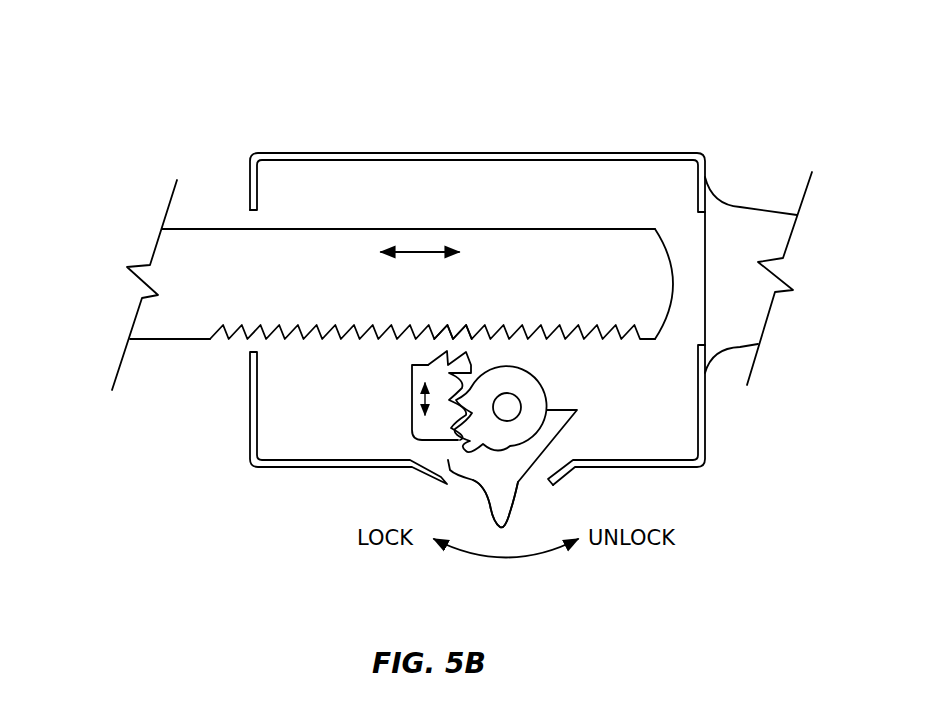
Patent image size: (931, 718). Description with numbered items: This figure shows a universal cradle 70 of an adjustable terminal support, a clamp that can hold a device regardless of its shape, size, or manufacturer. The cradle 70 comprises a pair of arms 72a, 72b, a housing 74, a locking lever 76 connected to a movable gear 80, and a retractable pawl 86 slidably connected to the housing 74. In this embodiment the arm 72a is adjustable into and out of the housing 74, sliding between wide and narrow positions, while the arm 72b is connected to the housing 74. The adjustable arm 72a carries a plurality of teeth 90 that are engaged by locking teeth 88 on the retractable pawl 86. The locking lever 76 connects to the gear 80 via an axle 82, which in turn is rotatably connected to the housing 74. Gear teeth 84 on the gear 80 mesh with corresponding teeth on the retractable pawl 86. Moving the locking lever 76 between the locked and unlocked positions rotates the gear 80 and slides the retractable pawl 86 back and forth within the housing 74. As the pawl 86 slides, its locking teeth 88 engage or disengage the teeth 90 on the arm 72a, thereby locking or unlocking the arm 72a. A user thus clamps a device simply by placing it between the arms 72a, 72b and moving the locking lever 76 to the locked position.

The universal cradle 70 is at (778, 65).
The arm 72a is at (175, 267).
The arm 72b is at (752, 225).
The housing 74 is at (488, 172).
The locking lever 76 is at (517, 483).
The movable gear 80 is at (528, 385).
The axle 82 is at (518, 407).
The gear teeth 84 is at (450, 428).
The retractable pawl 86 is at (412, 400).
The locking teeth 88 is at (443, 352).
The teeth 90 is at (444, 330).